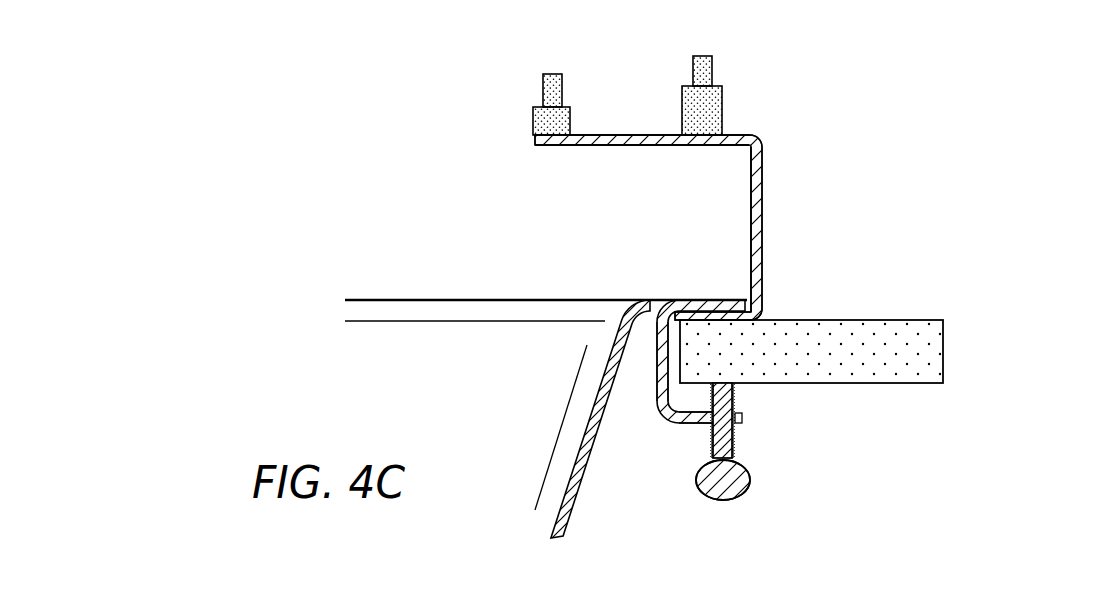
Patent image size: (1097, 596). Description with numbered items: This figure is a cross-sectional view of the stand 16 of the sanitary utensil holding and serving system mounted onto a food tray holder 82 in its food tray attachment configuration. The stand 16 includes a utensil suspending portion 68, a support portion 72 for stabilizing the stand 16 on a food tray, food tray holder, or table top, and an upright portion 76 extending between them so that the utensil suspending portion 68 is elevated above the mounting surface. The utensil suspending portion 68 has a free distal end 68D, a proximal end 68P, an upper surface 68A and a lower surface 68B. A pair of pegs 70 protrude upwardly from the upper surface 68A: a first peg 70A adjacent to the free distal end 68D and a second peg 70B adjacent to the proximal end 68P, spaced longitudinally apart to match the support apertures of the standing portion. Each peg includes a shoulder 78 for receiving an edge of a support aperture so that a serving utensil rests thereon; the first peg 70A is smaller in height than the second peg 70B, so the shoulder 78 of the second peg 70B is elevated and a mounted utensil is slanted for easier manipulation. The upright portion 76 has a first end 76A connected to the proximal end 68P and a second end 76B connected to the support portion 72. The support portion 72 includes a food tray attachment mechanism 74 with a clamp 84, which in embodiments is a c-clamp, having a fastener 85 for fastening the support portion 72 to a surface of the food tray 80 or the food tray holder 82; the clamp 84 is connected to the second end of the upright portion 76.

The stand 16 is at (798, 156).
The utensil suspending portion 68 is at (668, 135).
The upper surface 68A is at (593, 133).
The lower surface 68B is at (623, 147).
The free distal end 68D is at (535, 143).
The proximal end 68P is at (760, 133).
The pair of pegs 70 is at (654, 54).
The first peg 70A is at (555, 74).
The second peg 70B is at (703, 56).
The support portion 72 is at (695, 303).
The food tray attachment mechanism 74 is at (657, 368).
The upright portion 76 is at (763, 230).
The first end 76A is at (750, 150).
The second end 76B is at (754, 318).
The shoulder 78 is at (538, 107).
The food tray 80 is at (730, 300).
The food tray holder 82 is at (882, 320).
The clamp 84 is at (690, 421).
The fastener 85 is at (745, 484).